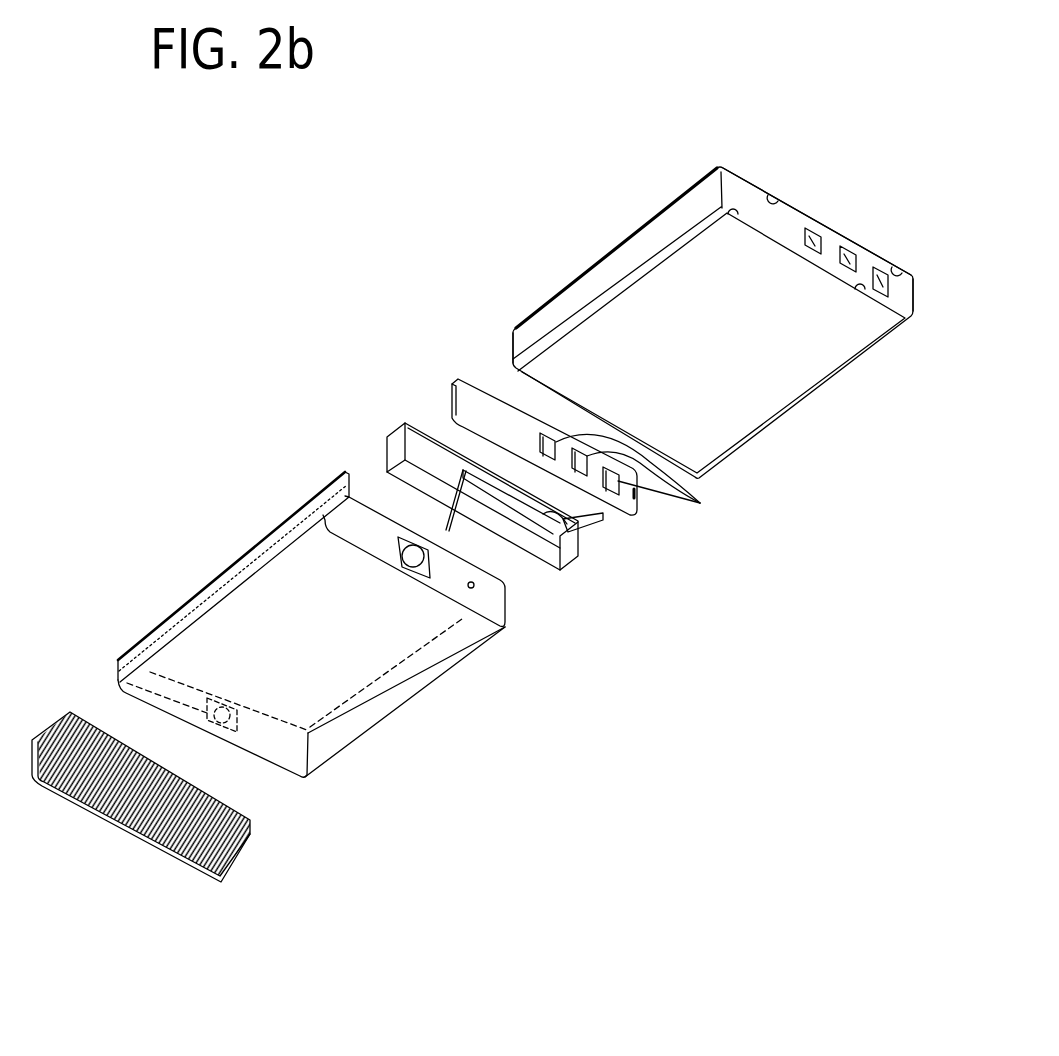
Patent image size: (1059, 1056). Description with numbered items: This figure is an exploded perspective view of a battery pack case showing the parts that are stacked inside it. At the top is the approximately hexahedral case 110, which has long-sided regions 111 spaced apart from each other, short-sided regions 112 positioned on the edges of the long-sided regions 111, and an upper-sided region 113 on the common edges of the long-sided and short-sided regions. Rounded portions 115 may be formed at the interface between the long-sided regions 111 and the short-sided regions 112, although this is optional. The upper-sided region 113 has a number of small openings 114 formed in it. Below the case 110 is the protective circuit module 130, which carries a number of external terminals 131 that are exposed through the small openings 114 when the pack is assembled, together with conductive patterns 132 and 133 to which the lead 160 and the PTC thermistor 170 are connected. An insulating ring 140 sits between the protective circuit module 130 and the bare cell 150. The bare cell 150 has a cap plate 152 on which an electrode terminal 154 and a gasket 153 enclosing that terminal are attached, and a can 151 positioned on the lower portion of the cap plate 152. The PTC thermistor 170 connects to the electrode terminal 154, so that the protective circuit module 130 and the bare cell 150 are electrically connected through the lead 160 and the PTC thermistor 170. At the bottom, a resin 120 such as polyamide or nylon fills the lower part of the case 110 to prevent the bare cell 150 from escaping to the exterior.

The case 110 is at (557, 240).
The long-sided regions 111 is at (680, 280).
The short-sided regions 112 is at (698, 205).
The upper-sided region 113 is at (742, 197).
The small openings 114 is at (852, 258).
The rounded portions 115 is at (688, 228).
The resin 120 is at (120, 828).
The protective circuit module 130 is at (485, 397).
The external terminals 131 is at (700, 503).
The conductive pattern 132 is at (448, 390).
The conductive pattern 133 is at (640, 498).
The insulating ring 140 is at (394, 447).
The bare cell 150 is at (455, 697).
The can 151 is at (373, 707).
The cap plate 152 is at (473, 584).
The gasket 153 is at (425, 572).
The electrode terminal 154 is at (412, 570).
The lead 160 is at (257, 555).
The PTC thermistor 170 is at (588, 537).